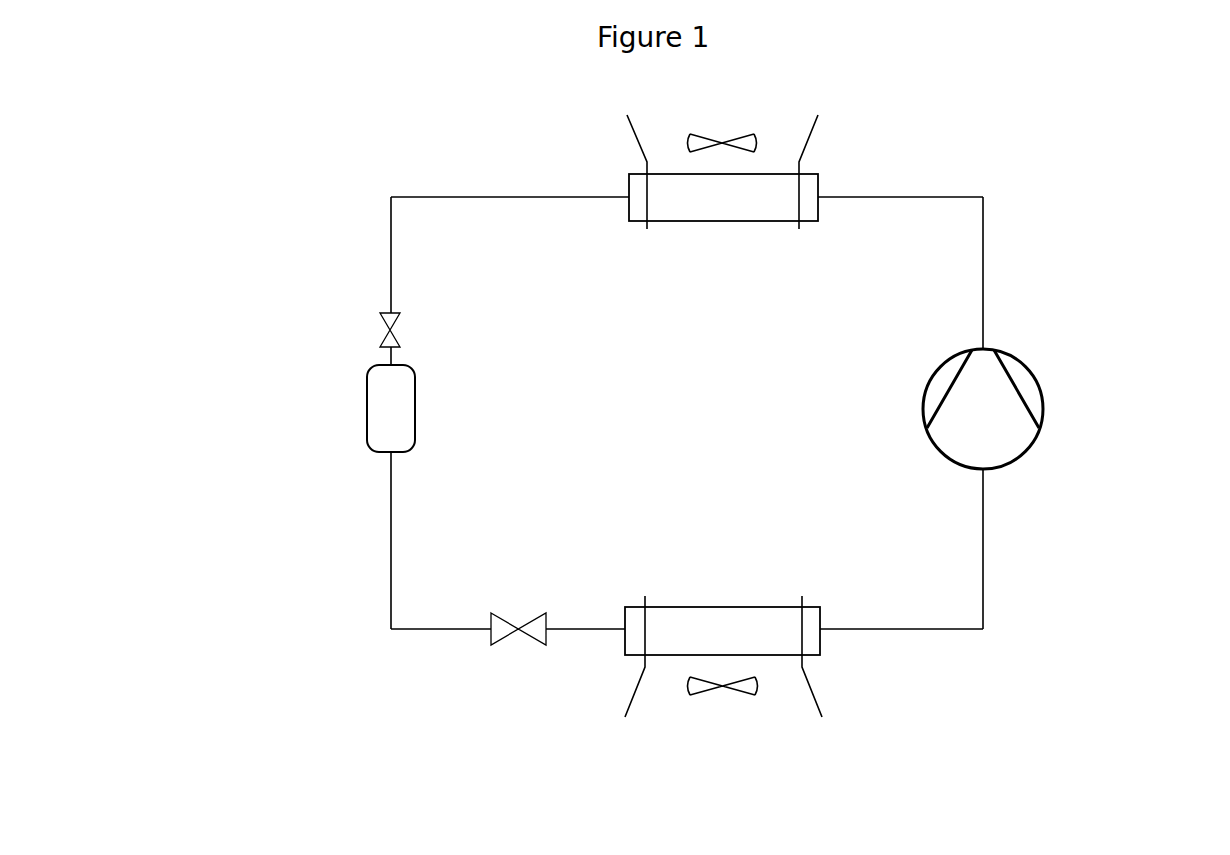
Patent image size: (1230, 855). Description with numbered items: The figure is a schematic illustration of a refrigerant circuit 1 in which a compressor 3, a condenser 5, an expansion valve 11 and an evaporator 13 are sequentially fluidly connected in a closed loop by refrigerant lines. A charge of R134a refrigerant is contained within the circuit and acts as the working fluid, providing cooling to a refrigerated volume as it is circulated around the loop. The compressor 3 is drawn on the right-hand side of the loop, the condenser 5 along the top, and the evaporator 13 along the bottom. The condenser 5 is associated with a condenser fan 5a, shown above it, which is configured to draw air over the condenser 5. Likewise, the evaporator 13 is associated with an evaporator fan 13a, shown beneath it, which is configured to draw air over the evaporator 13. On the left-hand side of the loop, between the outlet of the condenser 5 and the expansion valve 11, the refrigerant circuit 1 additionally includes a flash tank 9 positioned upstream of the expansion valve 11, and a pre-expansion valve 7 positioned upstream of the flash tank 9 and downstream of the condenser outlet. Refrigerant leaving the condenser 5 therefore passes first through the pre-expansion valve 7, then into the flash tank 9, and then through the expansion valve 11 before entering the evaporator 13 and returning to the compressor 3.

The refrigerant circuit 1 is at (250, 586).
The compressor 3 is at (1062, 388).
The condenser 5 is at (612, 171).
The condenser fan 5a is at (766, 122).
The pre-expansion valve 7 is at (368, 315).
The flash tank 9 is at (352, 390).
The expansion valve 11 is at (478, 660).
The evaporator 13 is at (836, 661).
The evaporator fan 13a is at (685, 710).